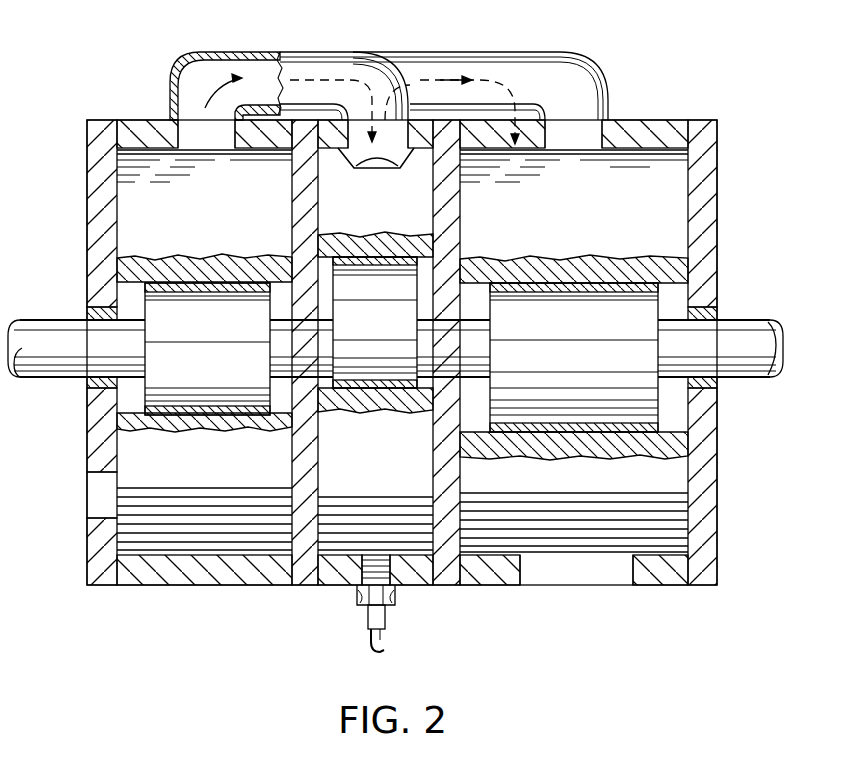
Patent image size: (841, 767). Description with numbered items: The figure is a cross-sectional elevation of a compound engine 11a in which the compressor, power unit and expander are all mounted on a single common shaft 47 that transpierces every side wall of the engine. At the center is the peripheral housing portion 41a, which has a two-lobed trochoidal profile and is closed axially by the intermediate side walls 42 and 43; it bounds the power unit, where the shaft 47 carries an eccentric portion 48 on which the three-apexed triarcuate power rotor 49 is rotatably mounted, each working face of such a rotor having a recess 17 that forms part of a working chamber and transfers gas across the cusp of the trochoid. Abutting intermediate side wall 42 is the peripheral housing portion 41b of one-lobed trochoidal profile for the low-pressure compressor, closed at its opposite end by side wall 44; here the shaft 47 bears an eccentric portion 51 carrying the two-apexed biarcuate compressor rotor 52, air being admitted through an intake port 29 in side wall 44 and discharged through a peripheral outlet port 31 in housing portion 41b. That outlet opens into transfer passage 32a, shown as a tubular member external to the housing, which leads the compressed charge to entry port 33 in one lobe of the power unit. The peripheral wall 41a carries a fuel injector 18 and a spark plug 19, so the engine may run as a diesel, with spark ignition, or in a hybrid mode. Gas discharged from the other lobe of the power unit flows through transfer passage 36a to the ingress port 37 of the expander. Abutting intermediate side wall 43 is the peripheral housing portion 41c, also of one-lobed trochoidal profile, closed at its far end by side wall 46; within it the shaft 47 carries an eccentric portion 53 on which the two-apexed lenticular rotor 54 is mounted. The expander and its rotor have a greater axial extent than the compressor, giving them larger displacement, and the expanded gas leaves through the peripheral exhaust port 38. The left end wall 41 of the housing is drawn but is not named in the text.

The compound engine 11a is at (112, 117).
The left end wall 41 is at (87, 209).
The side wall 44 is at (94, 437).
The intake port 29 is at (98, 517).
The side wall 46 is at (717, 468).
The intermediate side wall 42 is at (302, 586).
The intermediate side wall 43 is at (443, 586).
The central peripheral housing portion 41a is at (342, 587).
The peripheral housing portion 41b is at (246, 587).
The peripheral housing portion 41c is at (502, 587).
The peripheral exhaust port 38 is at (633, 580).
The compressor rotor 52 is at (210, 236).
The lenticular rotor 54 is at (578, 236).
The power rotor 49 is at (385, 486).
The common shaft 47 is at (46, 325).
The eccentric portion 51 is at (210, 334).
The eccentric portion 48 is at (390, 332).
The eccentric portion 53 is at (578, 334).
The peripheral outlet port 31 is at (201, 135).
The transfer passage 32a is at (305, 72).
The transfer passage 36a is at (522, 72).
The recess 17 is at (369, 156).
The entry port 33 is at (394, 137).
The ingress port 37 is at (587, 144).
The fuel injector 18 is at (366, 612).
The spark plug 19 is at (391, 604).